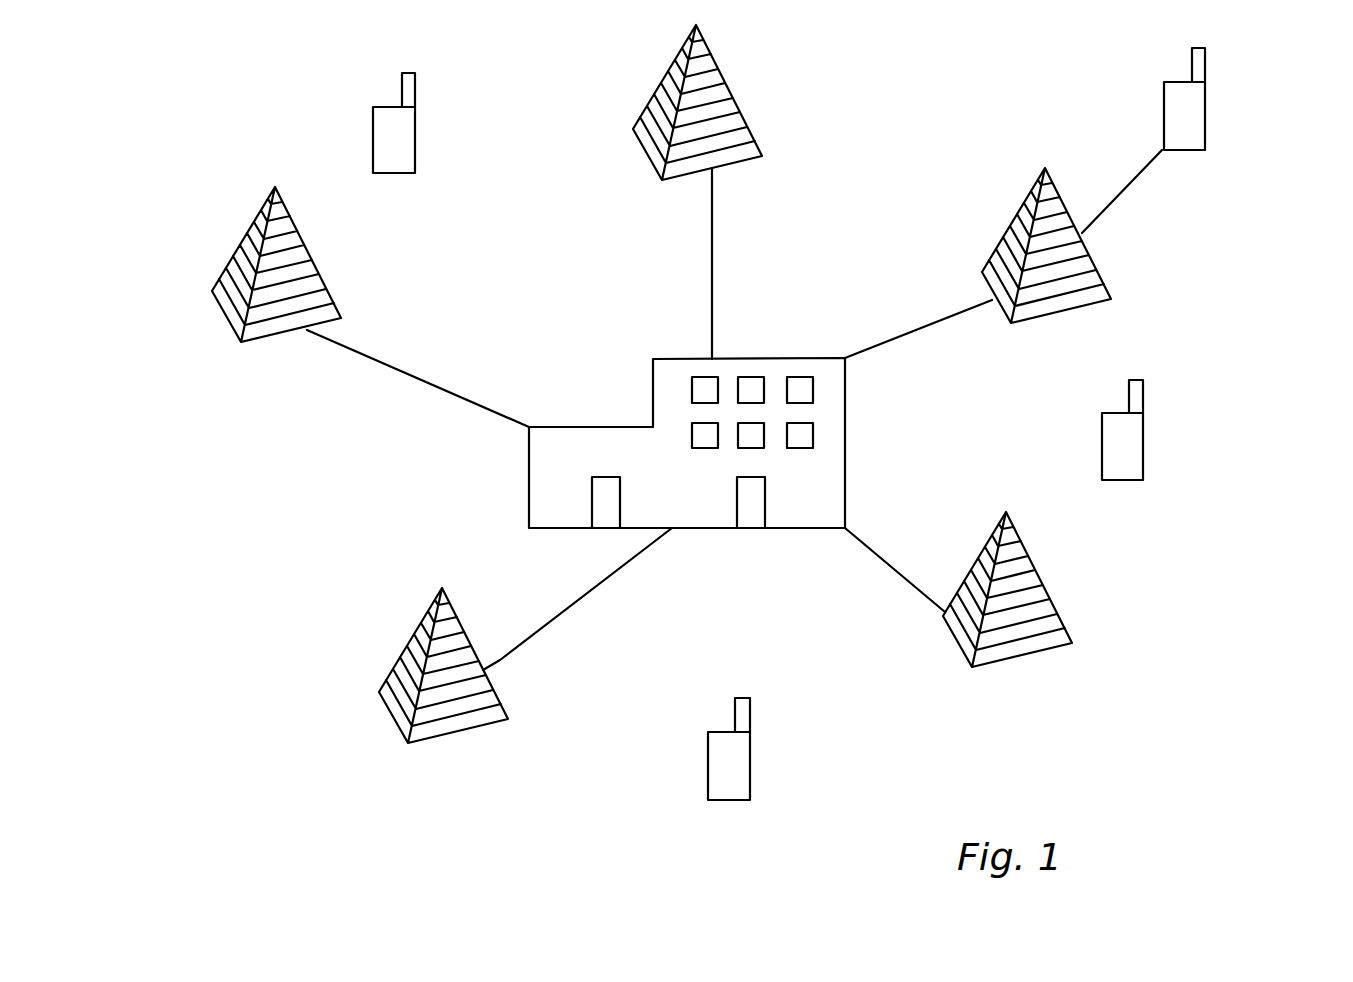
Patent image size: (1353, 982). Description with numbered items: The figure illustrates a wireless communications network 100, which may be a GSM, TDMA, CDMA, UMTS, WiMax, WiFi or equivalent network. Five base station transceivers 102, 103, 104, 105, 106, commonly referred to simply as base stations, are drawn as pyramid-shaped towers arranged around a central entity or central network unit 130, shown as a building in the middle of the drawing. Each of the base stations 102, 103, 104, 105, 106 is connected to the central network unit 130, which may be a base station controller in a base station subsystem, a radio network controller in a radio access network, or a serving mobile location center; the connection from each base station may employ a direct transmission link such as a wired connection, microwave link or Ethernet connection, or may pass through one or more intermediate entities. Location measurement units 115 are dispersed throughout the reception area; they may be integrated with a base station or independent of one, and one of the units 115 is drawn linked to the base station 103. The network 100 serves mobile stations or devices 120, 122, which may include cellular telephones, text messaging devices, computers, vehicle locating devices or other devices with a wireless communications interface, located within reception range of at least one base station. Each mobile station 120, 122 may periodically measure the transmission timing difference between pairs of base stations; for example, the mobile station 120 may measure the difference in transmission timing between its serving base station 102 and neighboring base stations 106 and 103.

The wireless communications network 100 is at (190, 109).
The base station 102 is at (699, 102).
The base station 103 is at (1046, 258).
The base station 104 is at (1007, 599).
The base station 105 is at (443, 685).
The base station 106 is at (276, 286).
The location measurement unit 115 is at (1205, 112).
The mobile station 120 is at (415, 138).
The mobile station 122 is at (750, 762).
The central network unit 130 is at (845, 473).